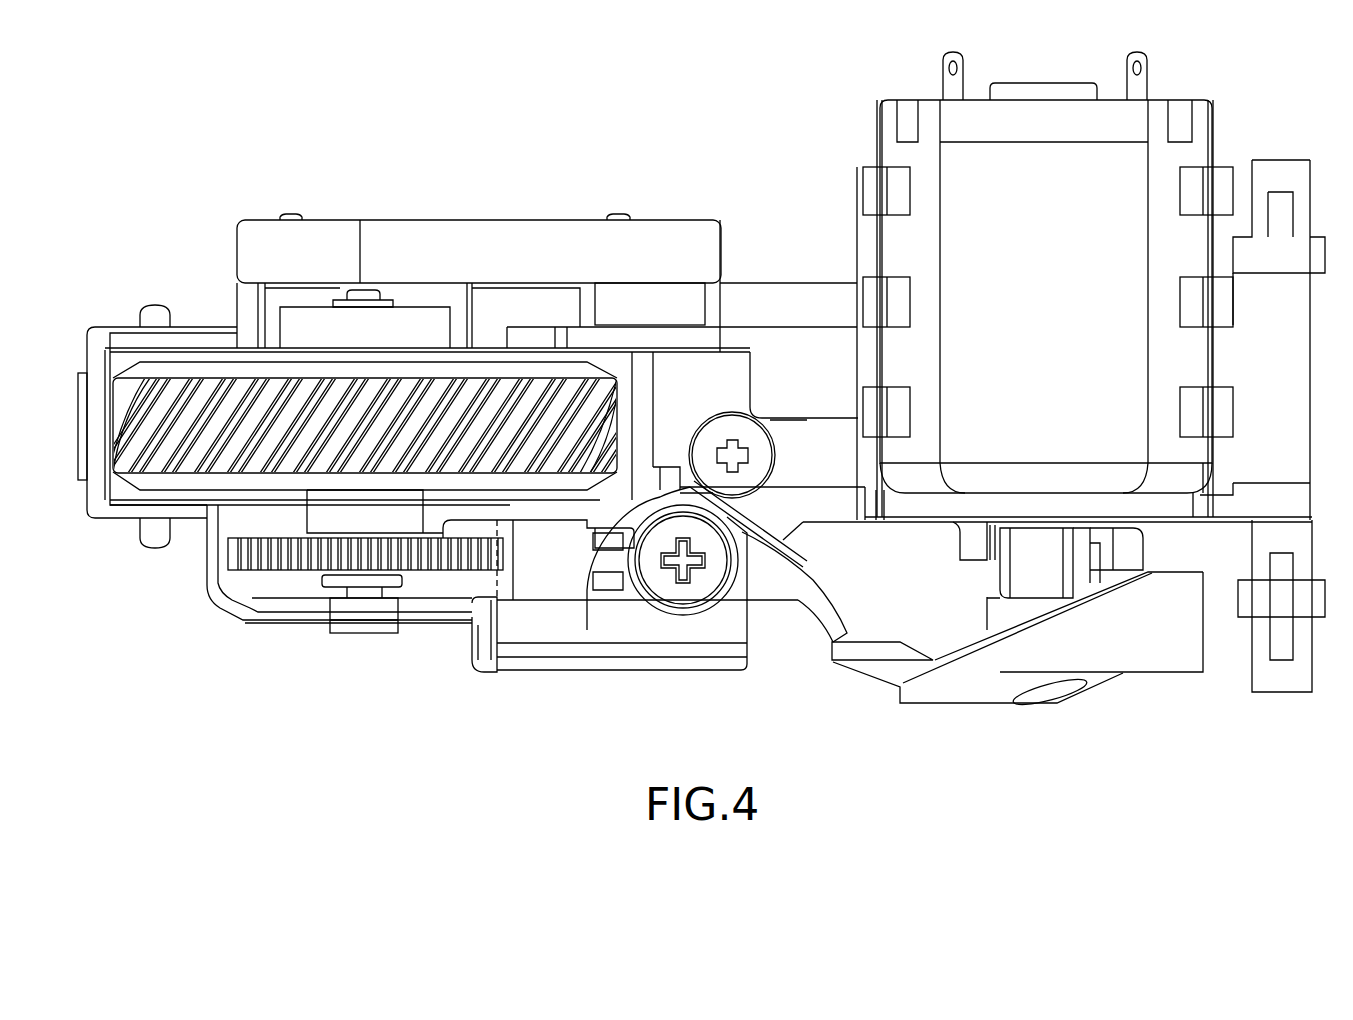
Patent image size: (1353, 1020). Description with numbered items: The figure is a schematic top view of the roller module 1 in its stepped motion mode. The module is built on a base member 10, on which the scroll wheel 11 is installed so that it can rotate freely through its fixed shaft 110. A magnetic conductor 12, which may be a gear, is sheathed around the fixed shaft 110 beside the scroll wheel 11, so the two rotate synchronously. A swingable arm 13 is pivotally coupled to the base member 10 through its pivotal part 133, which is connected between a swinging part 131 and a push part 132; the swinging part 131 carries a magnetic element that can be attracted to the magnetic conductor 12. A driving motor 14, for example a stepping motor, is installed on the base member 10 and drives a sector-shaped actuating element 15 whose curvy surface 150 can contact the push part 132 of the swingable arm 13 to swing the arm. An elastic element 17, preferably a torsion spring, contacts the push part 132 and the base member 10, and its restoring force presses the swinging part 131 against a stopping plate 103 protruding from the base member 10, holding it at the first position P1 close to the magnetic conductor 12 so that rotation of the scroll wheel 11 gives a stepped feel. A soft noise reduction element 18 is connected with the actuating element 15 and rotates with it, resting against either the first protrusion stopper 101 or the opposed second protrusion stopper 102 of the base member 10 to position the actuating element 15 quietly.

The roller module 1 is at (364, 120).
The base member 10 is at (343, 607).
The scroll wheel 11 is at (330, 413).
The magnetic conductor 12 is at (343, 550).
The swingable arm 13 is at (150, 140).
The swinging part 131 is at (557, 687).
The push part 132 is at (893, 670).
The pivotal part 133 is at (742, 683).
The driving motor 14 is at (1070, 170).
The actuating element 15 is at (1150, 657).
The elastic element 17 is at (763, 547).
The noise reduction element 18 is at (1133, 550).
The first protrusion stopper 101 is at (1010, 520).
The second protrusion stopper 102 is at (973, 547).
The stopping plate 103 is at (587, 590).
The fixed shaft 110 is at (323, 513).
The curvy surface 150 is at (973, 637).
The first position P1 is at (490, 587).